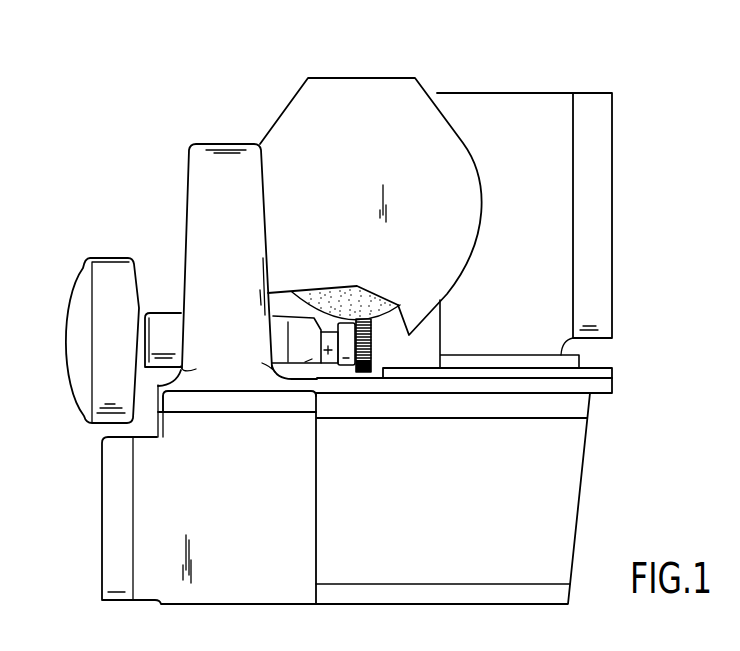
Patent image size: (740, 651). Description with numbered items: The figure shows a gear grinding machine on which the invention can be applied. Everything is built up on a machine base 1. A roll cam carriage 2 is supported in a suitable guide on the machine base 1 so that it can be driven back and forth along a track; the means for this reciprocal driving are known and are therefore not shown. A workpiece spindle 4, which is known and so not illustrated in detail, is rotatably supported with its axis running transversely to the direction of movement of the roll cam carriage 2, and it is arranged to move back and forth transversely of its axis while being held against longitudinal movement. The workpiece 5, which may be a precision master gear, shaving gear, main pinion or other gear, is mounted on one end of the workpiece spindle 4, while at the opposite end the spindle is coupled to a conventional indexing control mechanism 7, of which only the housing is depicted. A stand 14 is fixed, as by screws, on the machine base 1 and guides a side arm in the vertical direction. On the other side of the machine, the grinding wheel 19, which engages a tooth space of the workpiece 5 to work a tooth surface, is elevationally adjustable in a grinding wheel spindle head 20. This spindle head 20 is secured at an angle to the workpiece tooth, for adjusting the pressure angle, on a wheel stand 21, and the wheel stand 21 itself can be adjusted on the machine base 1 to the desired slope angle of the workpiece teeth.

The machine base 1 is at (565, 460).
The roll cam carriage 2 is at (163, 368).
The workpiece spindle 4 is at (328, 355).
The workpiece 5 is at (362, 372).
The indexing control mechanism 7 is at (64, 308).
The stand 14 is at (205, 218).
The grinding wheel 19 is at (382, 304).
The grinding wheel spindle head 20 is at (356, 88).
The wheel stand 21 is at (467, 112).